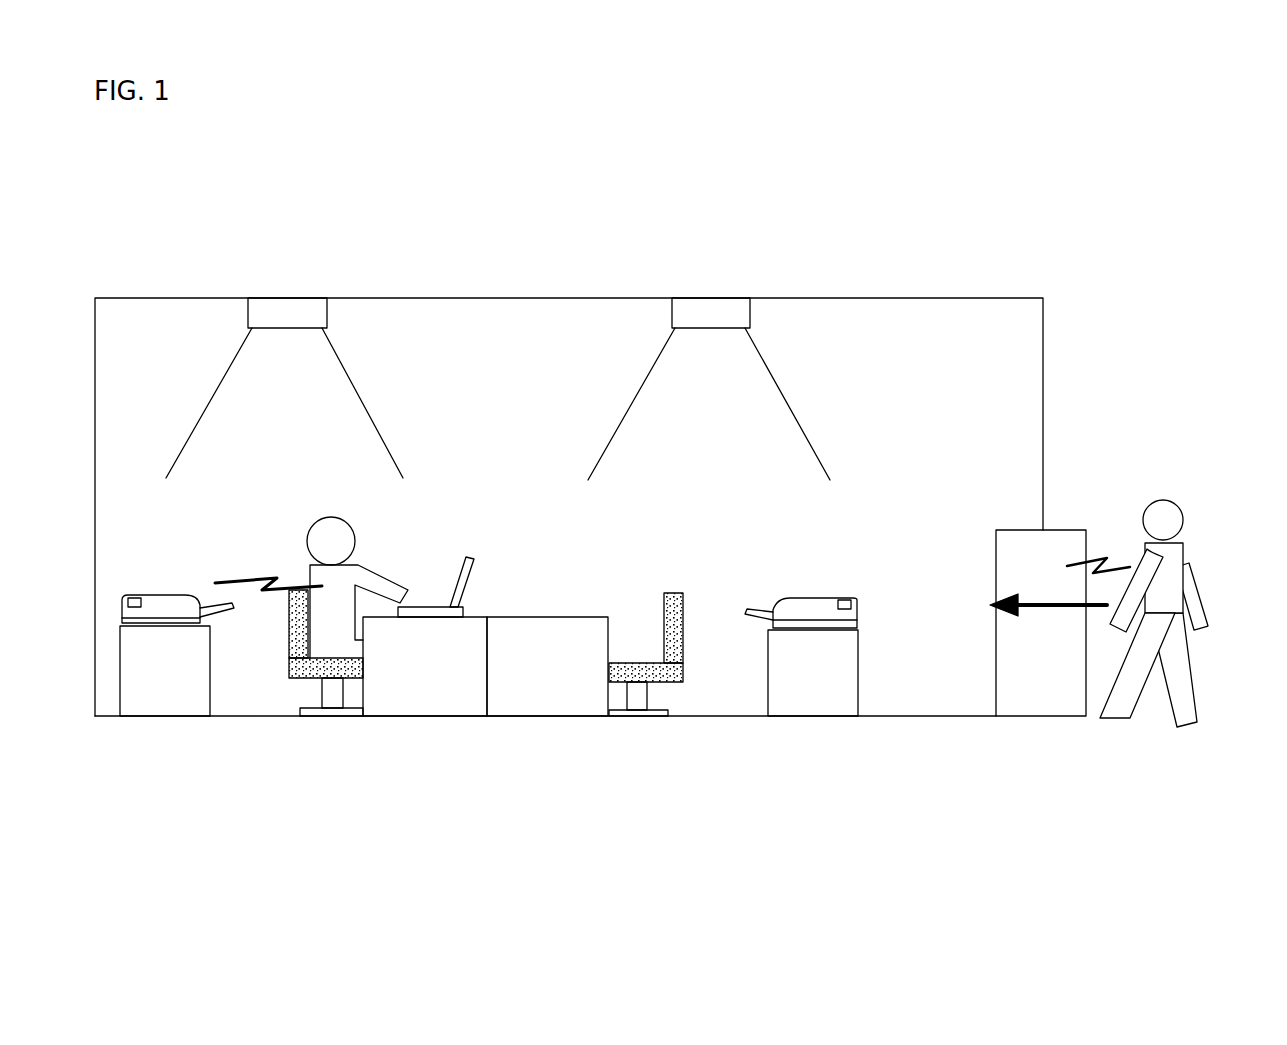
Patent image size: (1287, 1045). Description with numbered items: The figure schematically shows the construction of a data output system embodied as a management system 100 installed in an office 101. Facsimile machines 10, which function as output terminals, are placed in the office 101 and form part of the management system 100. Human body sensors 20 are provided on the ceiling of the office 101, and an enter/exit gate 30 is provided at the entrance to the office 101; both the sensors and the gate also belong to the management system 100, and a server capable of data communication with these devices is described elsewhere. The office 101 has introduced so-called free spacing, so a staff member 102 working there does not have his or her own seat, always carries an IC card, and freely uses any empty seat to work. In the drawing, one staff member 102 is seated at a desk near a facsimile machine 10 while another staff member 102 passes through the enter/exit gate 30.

The management system 100 is at (1085, 240).
The office 101 is at (997, 302).
The human body sensor 20 is at (277, 298).
The facsimile machine 10 is at (167, 594).
The enter/exit gate 30 is at (1057, 533).
The staff member 102 is at (312, 533).